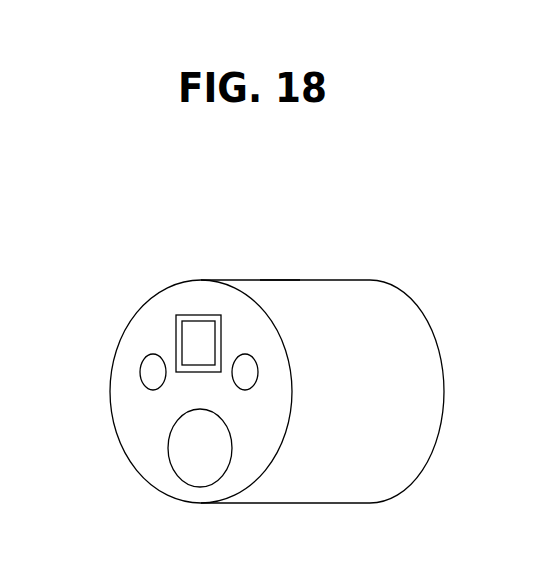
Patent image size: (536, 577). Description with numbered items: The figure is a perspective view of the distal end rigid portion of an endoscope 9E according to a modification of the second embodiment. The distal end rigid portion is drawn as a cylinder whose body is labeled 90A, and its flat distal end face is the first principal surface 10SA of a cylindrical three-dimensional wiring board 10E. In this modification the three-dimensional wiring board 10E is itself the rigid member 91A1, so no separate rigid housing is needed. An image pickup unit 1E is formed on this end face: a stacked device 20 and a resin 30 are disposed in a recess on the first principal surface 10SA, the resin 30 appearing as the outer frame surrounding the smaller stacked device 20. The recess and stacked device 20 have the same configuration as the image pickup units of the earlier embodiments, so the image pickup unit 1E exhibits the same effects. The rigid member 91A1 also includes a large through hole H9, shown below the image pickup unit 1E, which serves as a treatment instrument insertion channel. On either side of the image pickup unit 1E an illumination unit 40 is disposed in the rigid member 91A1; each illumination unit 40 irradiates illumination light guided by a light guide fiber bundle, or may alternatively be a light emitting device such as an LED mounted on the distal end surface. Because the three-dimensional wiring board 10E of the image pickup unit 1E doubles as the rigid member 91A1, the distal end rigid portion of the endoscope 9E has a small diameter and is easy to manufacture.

The image pickup unit 1E is at (220, 265).
The stacked device 20 is at (190, 314).
The resin 30 is at (203, 314).
The illumination unit 40 is at (140, 372).
The first principal surface 10SA is at (140, 413).
The rigid member 91A1 is at (290, 244).
The three-dimensional wiring board 10E is at (280, 279).
The cylindrical member 90A is at (332, 333).
The endoscope 9E is at (420, 198).
The through hole H9 is at (183, 447).